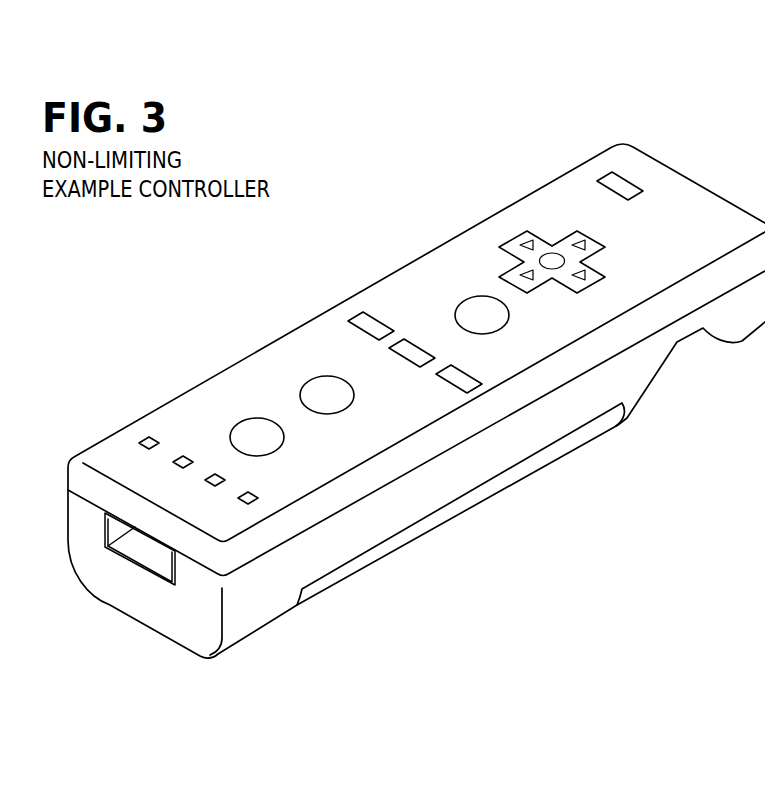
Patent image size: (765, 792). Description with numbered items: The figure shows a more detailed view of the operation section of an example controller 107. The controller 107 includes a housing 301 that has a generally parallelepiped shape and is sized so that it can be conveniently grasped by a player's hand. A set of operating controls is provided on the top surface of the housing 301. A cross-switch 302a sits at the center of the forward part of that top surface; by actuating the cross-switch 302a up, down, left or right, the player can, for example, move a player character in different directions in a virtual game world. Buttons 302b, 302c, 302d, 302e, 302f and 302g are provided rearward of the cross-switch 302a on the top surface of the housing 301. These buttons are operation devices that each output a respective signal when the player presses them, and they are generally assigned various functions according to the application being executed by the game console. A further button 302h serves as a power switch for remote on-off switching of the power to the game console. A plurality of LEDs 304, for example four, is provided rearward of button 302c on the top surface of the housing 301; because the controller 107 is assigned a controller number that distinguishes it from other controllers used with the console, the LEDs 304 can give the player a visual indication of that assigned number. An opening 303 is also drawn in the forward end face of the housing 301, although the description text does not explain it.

The controller 107 is at (549, 150).
The housing 301 is at (103, 441).
The cross-switch 302a is at (558, 245).
The button 302b is at (325, 390).
The button 302c is at (257, 431).
The button 302d is at (478, 303).
The button 302e is at (367, 323).
The button 302f is at (406, 353).
The button 302g is at (467, 385).
The power switch button 302h is at (617, 185).
The connector 303 is at (152, 552).
The LEDs 304 is at (248, 500).